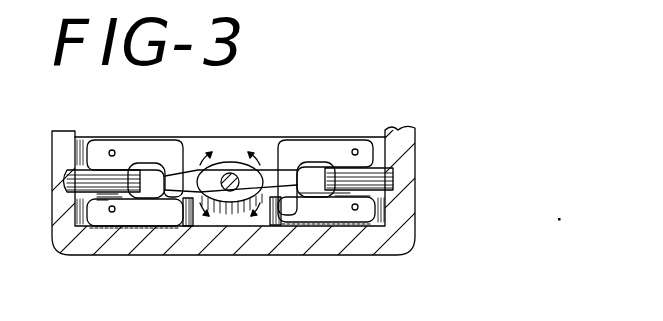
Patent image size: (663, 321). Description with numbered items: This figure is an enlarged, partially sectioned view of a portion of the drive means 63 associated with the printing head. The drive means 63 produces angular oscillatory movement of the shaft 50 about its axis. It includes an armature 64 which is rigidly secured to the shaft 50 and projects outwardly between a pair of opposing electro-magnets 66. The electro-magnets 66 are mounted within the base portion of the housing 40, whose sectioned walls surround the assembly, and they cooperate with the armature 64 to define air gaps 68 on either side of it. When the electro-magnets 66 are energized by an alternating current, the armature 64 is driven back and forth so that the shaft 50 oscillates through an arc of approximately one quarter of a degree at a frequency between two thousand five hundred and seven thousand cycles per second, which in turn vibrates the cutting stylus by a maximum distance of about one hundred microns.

The housing 40 is at (400, 223).
The shaft 50 is at (233, 172).
The drive means 63 is at (390, 104).
The armature 64 is at (222, 168).
The electro-magnets 66 is at (128, 150).
The air gaps 68 is at (160, 163).